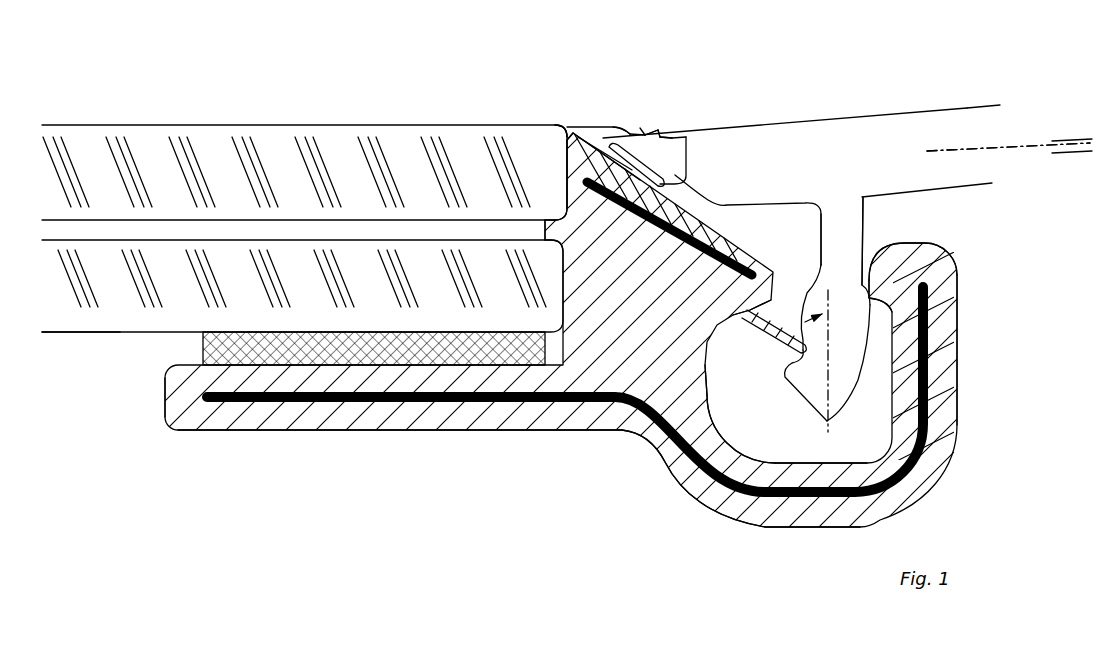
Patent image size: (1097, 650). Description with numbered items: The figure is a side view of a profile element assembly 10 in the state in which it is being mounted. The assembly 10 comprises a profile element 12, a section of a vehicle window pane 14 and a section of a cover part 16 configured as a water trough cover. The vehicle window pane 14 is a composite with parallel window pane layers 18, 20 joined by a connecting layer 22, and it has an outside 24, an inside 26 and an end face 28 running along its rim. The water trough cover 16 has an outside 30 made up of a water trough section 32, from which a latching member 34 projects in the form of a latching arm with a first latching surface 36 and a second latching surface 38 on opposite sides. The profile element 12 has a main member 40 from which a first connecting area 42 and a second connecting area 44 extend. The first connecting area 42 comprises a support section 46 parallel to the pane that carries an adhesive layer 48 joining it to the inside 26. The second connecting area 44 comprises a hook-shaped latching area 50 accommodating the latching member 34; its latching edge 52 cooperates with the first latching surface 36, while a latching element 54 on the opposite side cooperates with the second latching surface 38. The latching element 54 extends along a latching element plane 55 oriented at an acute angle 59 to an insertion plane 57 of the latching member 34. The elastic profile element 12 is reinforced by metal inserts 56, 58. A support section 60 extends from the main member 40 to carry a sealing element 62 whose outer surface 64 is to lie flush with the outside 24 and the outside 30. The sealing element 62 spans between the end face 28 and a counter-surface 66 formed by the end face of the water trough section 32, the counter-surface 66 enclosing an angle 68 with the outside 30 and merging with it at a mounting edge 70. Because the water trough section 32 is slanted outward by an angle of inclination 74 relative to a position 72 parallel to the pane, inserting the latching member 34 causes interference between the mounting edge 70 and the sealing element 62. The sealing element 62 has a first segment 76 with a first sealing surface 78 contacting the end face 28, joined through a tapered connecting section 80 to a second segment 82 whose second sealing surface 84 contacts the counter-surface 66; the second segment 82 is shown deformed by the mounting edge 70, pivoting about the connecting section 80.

The profile element assembly 10 is at (420, 550).
The profile element 12 is at (598, 484).
The vehicle window pane 14 is at (362, 96).
The cover part 16 is at (940, 80).
The window pane layer 18 is at (155, 165).
The window pane layer 20 is at (118, 316).
The connecting layer 22 is at (220, 235).
The outside 24 is at (466, 120).
The inside 26 is at (72, 336).
The end face 28 is at (602, 126).
The outside 30 is at (787, 112).
The water trough section 32 is at (740, 153).
The latching member 34 is at (805, 428).
The first latching surface 36 is at (875, 354).
The second latching surface 38 is at (783, 357).
The main member 40 is at (667, 343).
The first connecting area 42 is at (376, 440).
The second connecting area 44 is at (974, 485).
The support section 46 is at (288, 402).
The adhesive layer 48 is at (505, 368).
The latching area 50 is at (779, 441).
The latching edge 52 is at (883, 292).
The latching element 54 is at (748, 345).
The latching element plane 55 is at (712, 318).
The metal insert 56 is at (574, 400).
The insertion plane 57 is at (835, 423).
The metal insert 58 is at (628, 262).
The acute angle 59 is at (802, 292).
The support section 60 is at (581, 197).
The sealing element 62 is at (651, 127).
The outer surface 64 is at (578, 122).
The counter-surface 66 is at (686, 128).
The angle 68 is at (678, 125).
The mounting edge 70 is at (660, 128).
The position 72 is at (1013, 156).
The angle of inclination 74 is at (1070, 180).
The first segment 76 is at (567, 127).
The first sealing surface 78 is at (555, 141).
The connecting section 80 is at (630, 128).
The second segment 82 is at (695, 210).
The second sealing surface 84 is at (639, 102).